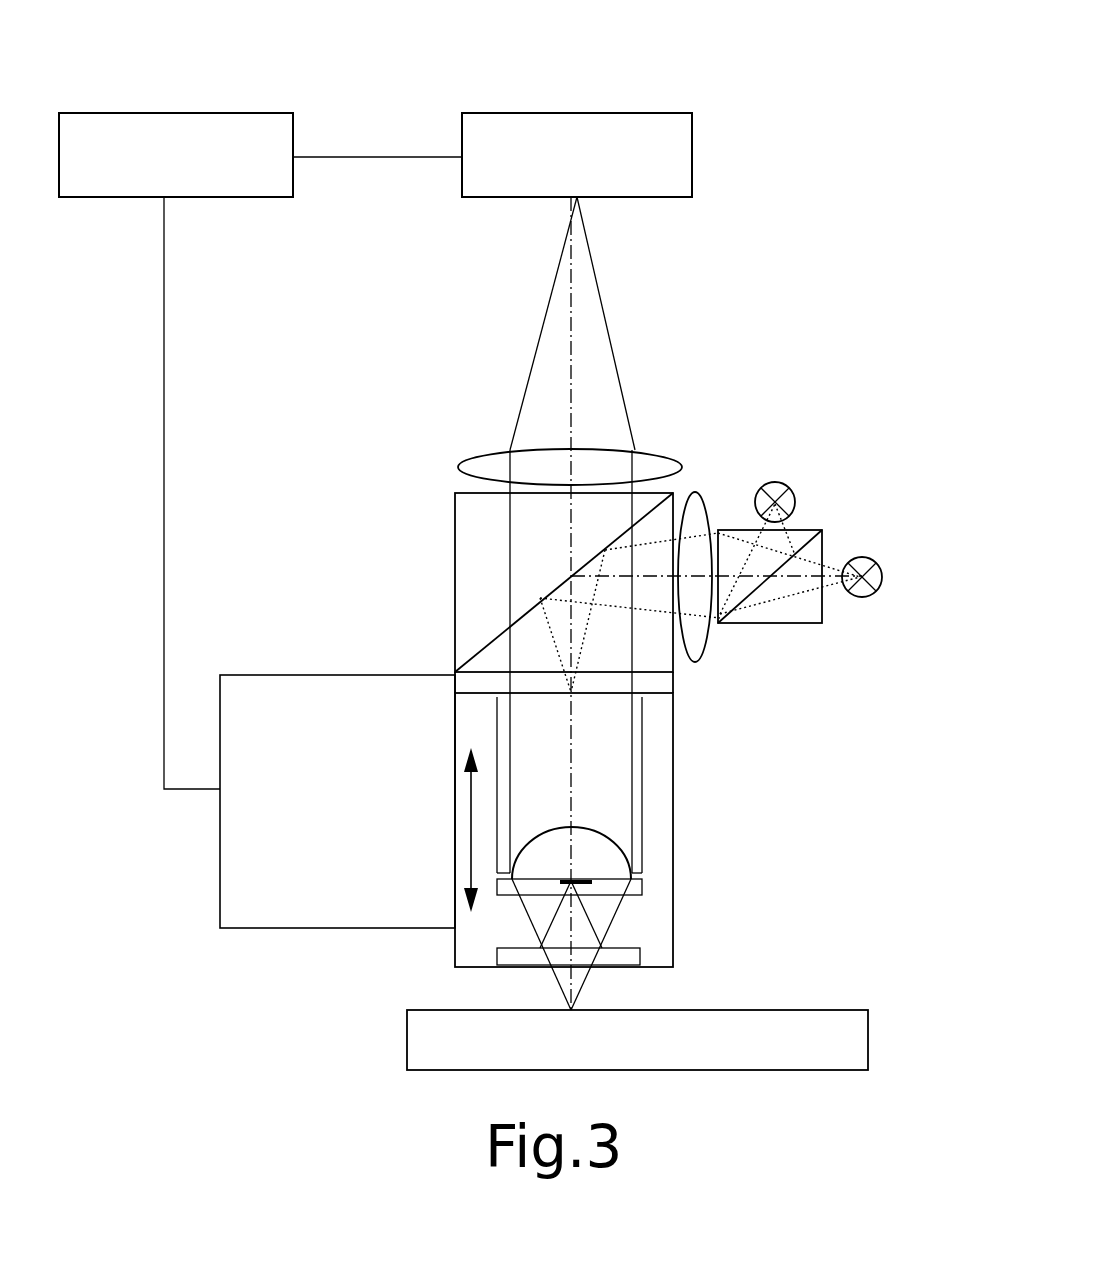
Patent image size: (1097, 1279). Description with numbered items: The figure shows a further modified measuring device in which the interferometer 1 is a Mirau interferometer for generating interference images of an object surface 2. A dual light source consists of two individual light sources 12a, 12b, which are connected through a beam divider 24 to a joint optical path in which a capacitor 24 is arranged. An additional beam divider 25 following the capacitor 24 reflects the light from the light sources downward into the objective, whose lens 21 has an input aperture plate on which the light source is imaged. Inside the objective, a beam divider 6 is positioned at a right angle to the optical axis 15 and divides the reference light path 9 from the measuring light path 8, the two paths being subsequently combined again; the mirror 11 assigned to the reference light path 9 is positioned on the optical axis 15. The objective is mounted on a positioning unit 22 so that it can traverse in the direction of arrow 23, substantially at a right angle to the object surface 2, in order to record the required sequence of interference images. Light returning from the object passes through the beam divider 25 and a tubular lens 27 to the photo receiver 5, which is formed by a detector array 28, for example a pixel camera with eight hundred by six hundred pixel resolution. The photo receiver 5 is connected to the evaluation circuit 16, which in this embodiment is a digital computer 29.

The interferometer 1 is at (860, 355).
The object surface 2 is at (842, 1008).
The photo receiver 5 is at (705, 98).
The beam divider 6 is at (640, 950).
The measuring light path 8 is at (523, 918).
The reference light path 9 is at (590, 913).
The mirror 11 is at (592, 883).
The individual light source 12a is at (818, 472).
The individual light source 12b is at (895, 555).
The optical axis 15 is at (568, 765).
The evaluation circuit 16 is at (262, 92).
The lens 21 is at (583, 858).
The positioning unit 22 is at (276, 908).
The arrow 23 is at (468, 826).
The beam divider / capacitor 24 is at (700, 520).
The beam divider 25 is at (470, 548).
The tubular lens 27 is at (660, 455).
The detector array 28 is at (577, 155).
The digital computer 29 is at (176, 155).